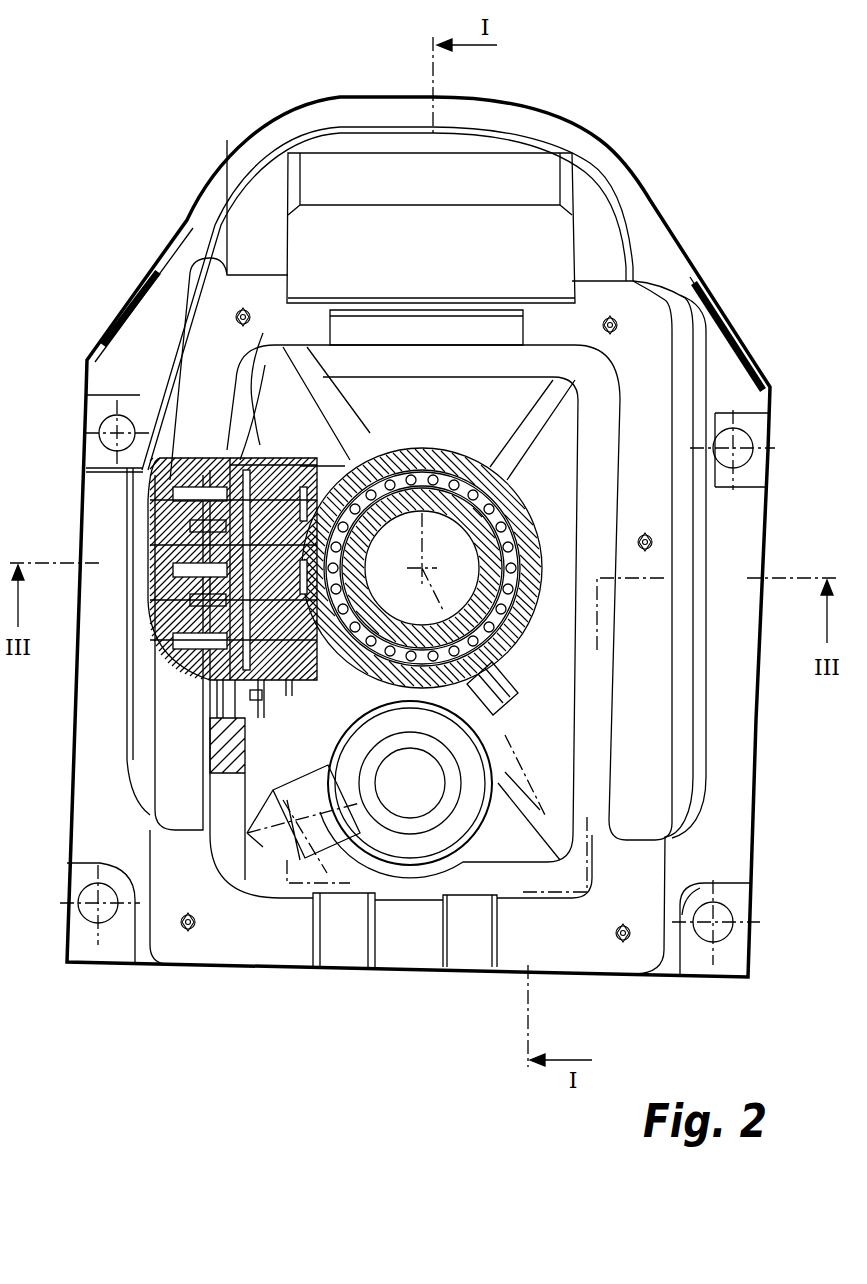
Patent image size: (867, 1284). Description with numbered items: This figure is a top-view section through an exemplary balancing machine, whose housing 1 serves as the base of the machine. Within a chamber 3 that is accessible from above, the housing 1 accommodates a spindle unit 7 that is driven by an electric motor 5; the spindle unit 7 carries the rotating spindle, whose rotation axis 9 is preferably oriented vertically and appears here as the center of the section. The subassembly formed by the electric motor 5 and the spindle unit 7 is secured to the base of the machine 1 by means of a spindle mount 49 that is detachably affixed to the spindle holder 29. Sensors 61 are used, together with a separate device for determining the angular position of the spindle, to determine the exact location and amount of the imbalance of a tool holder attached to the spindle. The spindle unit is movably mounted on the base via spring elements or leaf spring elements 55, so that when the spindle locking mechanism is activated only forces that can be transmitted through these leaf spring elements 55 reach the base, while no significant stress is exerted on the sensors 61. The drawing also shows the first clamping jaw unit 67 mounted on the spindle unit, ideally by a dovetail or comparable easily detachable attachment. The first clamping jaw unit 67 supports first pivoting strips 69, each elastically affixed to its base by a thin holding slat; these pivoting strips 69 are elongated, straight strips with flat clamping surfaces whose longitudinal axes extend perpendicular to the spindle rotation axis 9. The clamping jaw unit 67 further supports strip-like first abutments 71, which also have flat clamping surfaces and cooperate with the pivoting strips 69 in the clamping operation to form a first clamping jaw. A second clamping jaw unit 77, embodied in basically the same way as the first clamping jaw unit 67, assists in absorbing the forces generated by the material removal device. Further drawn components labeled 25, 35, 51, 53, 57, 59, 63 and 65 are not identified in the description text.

The housing 1 is at (663, 303).
The chamber 3 is at (578, 752).
The electric motor 5 is at (437, 842).
The spindle unit 7 is at (530, 478).
The rotation axis 9 is at (425, 575).
The bearing outer ring 25 is at (483, 473).
The spindle holder 29 is at (448, 457).
The strut 35 is at (505, 755).
The spindle mount 49 is at (245, 452).
The cover plate 51 is at (235, 462).
The cross strut 53 is at (290, 462).
The leaf spring elements 55 is at (262, 720).
The lower contact 57 is at (160, 625).
The upper contact 59 is at (160, 510).
The sensors 61 is at (160, 552).
The contact window 63 is at (160, 527).
The connector column 65 is at (232, 455).
The first clamping jaw unit 67 is at (117, 477).
The first pivoting strips 69 is at (213, 670).
The first abutments 71 is at (335, 460).
The second clamping jaw unit 77 is at (336, 567).